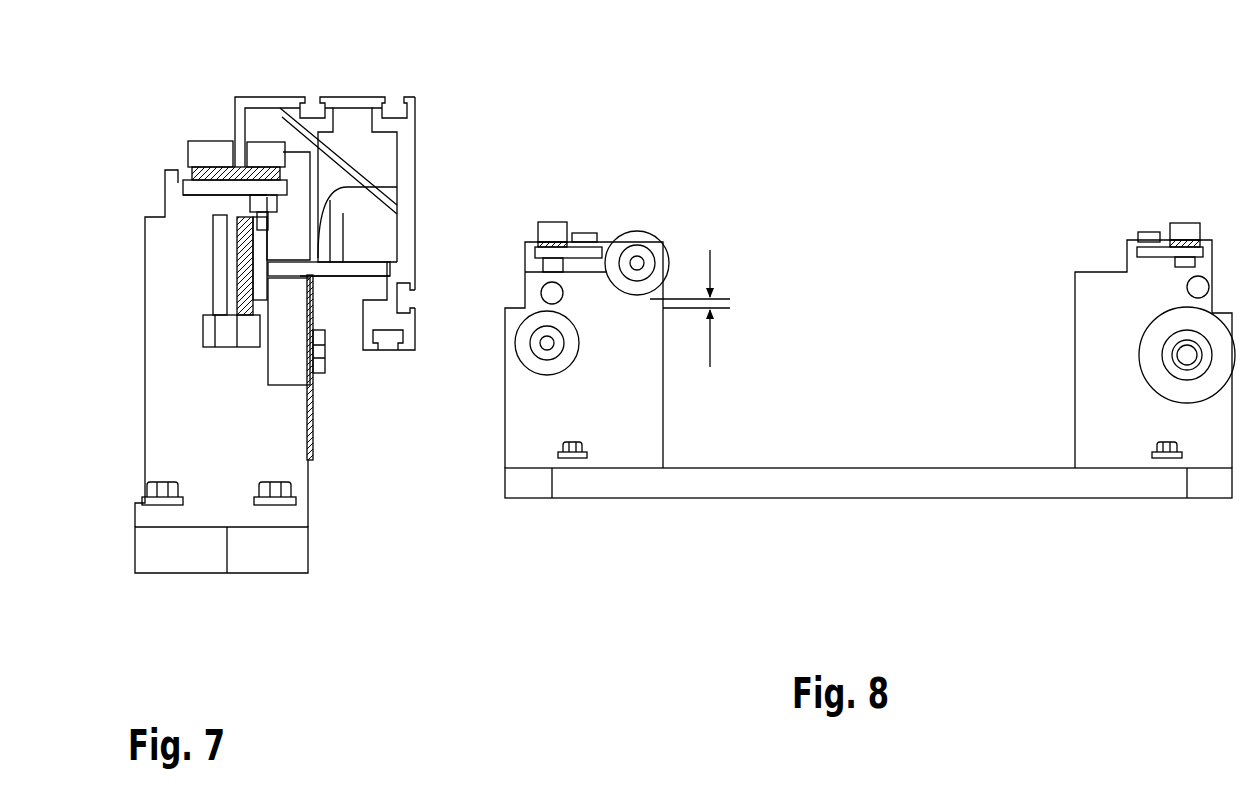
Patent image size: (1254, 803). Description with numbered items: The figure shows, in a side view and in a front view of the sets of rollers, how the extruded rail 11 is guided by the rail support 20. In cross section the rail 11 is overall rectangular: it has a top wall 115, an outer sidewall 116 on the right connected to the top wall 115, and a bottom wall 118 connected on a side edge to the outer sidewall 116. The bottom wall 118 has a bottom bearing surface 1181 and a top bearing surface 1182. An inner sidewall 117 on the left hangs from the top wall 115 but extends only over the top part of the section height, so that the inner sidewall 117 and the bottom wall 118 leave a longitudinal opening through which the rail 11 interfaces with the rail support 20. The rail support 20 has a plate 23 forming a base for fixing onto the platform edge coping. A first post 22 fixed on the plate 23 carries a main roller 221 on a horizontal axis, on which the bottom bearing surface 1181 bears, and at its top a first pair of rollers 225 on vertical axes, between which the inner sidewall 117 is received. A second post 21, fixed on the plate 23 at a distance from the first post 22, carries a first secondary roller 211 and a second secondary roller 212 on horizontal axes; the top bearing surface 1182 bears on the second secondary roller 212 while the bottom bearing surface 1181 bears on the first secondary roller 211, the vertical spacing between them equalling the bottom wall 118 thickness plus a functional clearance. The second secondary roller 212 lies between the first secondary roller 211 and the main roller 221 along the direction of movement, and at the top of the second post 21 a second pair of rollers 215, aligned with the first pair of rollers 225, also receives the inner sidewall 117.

In FIG. 7, the rail 11 is at (363, 176).
In FIG. 7, the top wall 115 is at (353, 97).
In FIG. 7, the outer sidewall 116 is at (407, 232).
In FIG. 7, the inner sidewall 117 is at (235, 118).
In FIG. 7, the bottom wall 118 is at (379, 284).
In FIG. 7, the bottom bearing surface 1181 is at (335, 286).
In FIG. 7, the top bearing surface 1182 is at (335, 188).
In FIG. 7, the rail support 20 is at (277, 592).
In FIG. 8, the rail support 20 is at (547, 535).
In FIG. 7, the second post 21 is at (188, 417).
In FIG. 8, the second post 21 is at (545, 405).
In FIG. 7, the first secondary roller 211 is at (283, 385).
In FIG. 8, the first secondary roller 211 is at (570, 342).
In FIG. 7, the second secondary roller 212 is at (280, 239).
In FIG. 8, the second secondary roller 212 is at (653, 240).
In FIG. 7, the second pair of rollers 215 is at (185, 153).
In FIG. 8, the second pair of rollers 215 is at (553, 230).
In FIG. 8, the first post 22 is at (1103, 392).
In FIG. 8, the main roller 221 is at (1143, 355).
In FIG. 8, the first pair of rollers 225 is at (1183, 232).
In FIG. 7, the plate 23 is at (197, 553).
In FIG. 8, the plate 23 is at (922, 480).